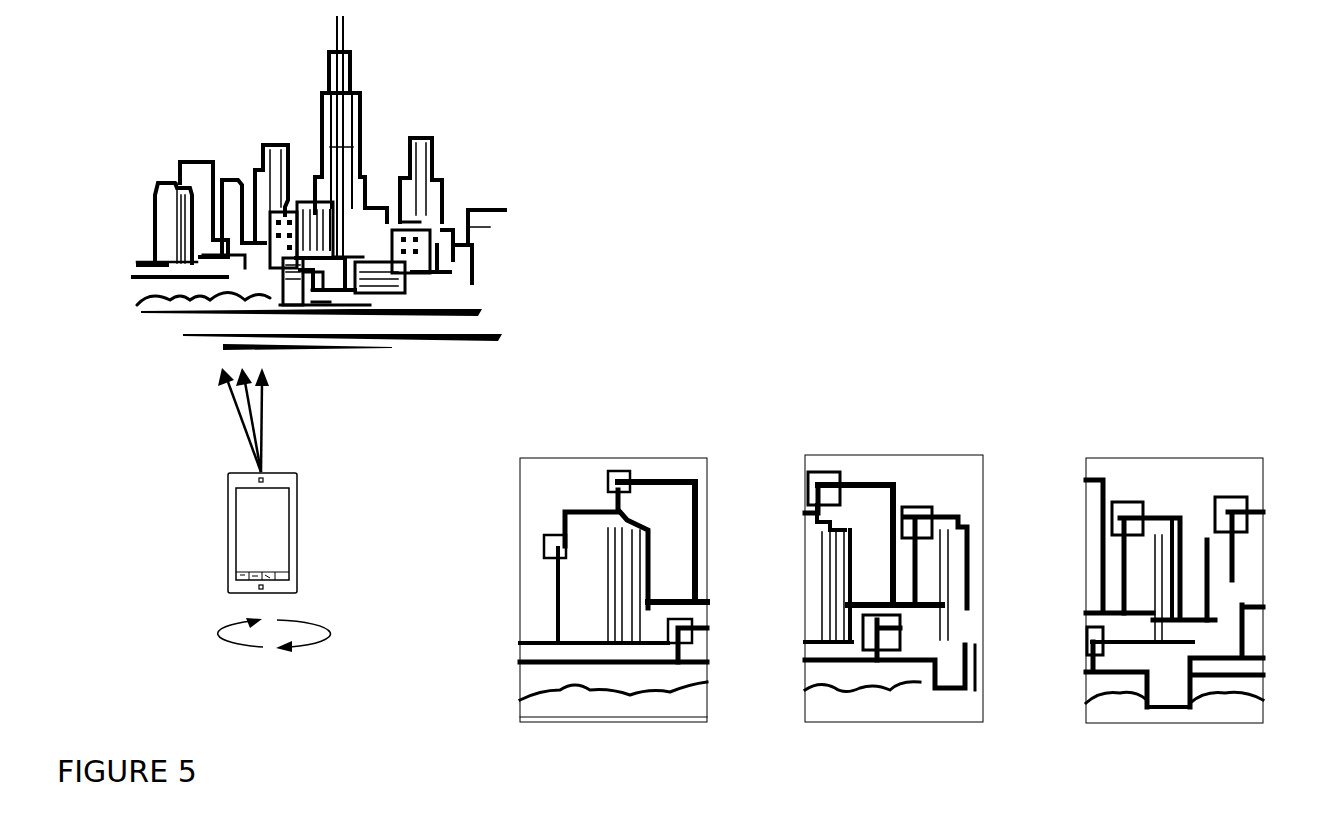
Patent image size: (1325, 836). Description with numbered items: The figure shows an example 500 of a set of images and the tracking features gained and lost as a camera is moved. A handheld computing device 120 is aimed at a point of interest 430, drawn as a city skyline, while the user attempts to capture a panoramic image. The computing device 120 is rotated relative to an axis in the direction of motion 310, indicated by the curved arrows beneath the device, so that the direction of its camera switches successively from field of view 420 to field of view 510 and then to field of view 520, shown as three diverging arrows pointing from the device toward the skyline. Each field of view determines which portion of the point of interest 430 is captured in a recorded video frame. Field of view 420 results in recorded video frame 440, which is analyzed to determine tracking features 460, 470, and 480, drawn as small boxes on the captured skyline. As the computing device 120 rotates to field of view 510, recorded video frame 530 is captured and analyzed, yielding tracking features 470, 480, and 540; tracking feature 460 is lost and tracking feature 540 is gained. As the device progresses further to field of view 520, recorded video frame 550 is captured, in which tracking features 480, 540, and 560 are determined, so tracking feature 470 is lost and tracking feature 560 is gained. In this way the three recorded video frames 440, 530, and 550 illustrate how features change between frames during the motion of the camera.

The point of interest 430 is at (155, 205).
The computing device 120 is at (228, 535).
The field of view 510 is at (243, 398).
The field of view 420 is at (247, 438).
The field of view 520 is at (263, 417).
The direction of motion 310 is at (207, 638).
The example 500 is at (288, 716).
The recorded video frame 440 is at (633, 763).
The recorded video frame 530 is at (901, 763).
The recorded video frame 550 is at (1188, 763).
The tracking feature 470 is at (608, 471).
The tracking feature 460 is at (544, 540).
The tracking feature 480 is at (690, 618).
The tracking feature 540 is at (930, 507).
The tracking feature 560 is at (1247, 500).